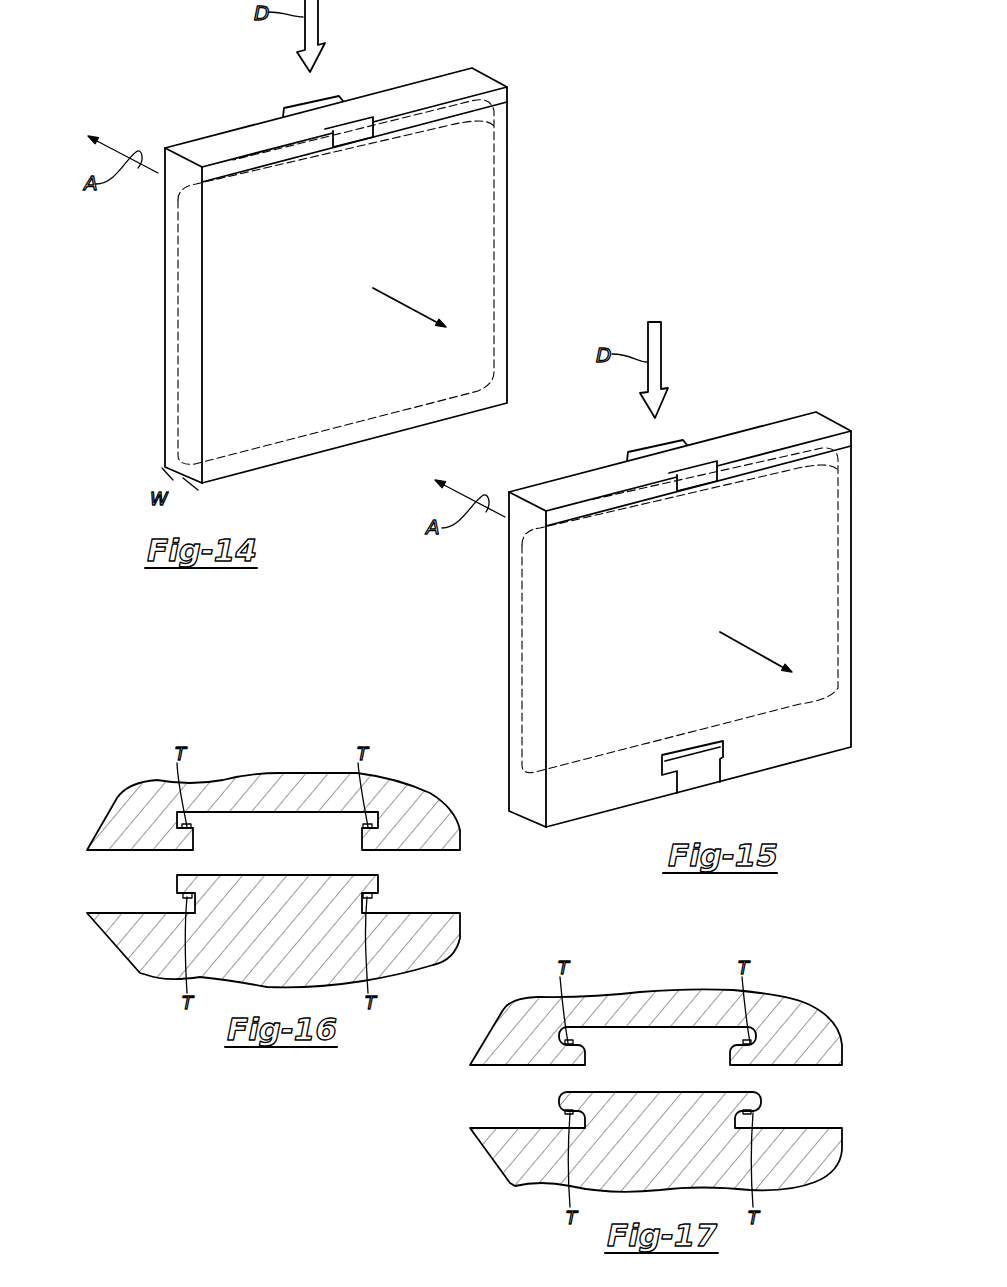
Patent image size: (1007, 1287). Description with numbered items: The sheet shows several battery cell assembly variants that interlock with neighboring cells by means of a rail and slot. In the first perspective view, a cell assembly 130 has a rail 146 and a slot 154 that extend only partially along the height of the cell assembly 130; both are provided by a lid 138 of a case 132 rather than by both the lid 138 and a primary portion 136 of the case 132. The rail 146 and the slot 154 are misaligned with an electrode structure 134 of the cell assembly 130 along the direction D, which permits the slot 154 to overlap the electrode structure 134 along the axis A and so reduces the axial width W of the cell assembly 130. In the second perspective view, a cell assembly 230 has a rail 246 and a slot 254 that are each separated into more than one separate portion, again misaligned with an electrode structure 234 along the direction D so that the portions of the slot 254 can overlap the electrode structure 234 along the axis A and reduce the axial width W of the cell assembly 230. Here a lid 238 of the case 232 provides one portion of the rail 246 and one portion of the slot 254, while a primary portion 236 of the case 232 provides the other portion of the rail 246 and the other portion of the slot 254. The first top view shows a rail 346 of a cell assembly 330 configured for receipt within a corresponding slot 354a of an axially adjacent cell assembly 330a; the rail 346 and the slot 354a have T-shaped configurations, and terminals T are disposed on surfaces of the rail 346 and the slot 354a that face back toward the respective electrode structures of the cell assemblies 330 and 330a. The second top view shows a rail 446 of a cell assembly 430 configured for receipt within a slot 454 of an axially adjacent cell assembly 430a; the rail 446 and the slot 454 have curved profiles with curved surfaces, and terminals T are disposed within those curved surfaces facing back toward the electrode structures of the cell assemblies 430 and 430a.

In FIG. 14, the cell assembly 130 is at (407, 255).
In FIG. 14, the case 132 is at (500, 216).
In FIG. 14, the electrode structure 134 is at (500, 337).
In FIG. 14, the primary portion 136 is at (500, 122).
In FIG. 14, the lid 138 is at (502, 97).
In FIG. 14, the rail 146 is at (302, 103).
In FIG. 14, the slot 154 is at (362, 140).
In FIG. 15, the cell assembly 230 is at (714, 576).
In FIG. 15, the case 232 is at (846, 534).
In FIG. 15, the electrode structure 234 is at (838, 604).
In FIG. 15, the primary portion 236 is at (846, 488).
In FIG. 15, the lid 238 is at (845, 441).
In FIG. 15, the rail 246 is at (650, 447).
In FIG. 15, the slot 254 is at (706, 484).
In FIG. 16, the cell assembly 330a is at (275, 811).
In FIG. 16, the rail 346 is at (373, 886).
In FIG. 16, the slot 354a is at (212, 848).
In FIG. 16, the cell assembly 330 is at (296, 925).
In FIG. 17, the cell assembly 430a is at (660, 1028).
In FIG. 17, the rail 446 is at (760, 1102).
In FIG. 17, the slot 454 is at (611, 1061).
In FIG. 17, the cell assembly 430 is at (677, 1142).